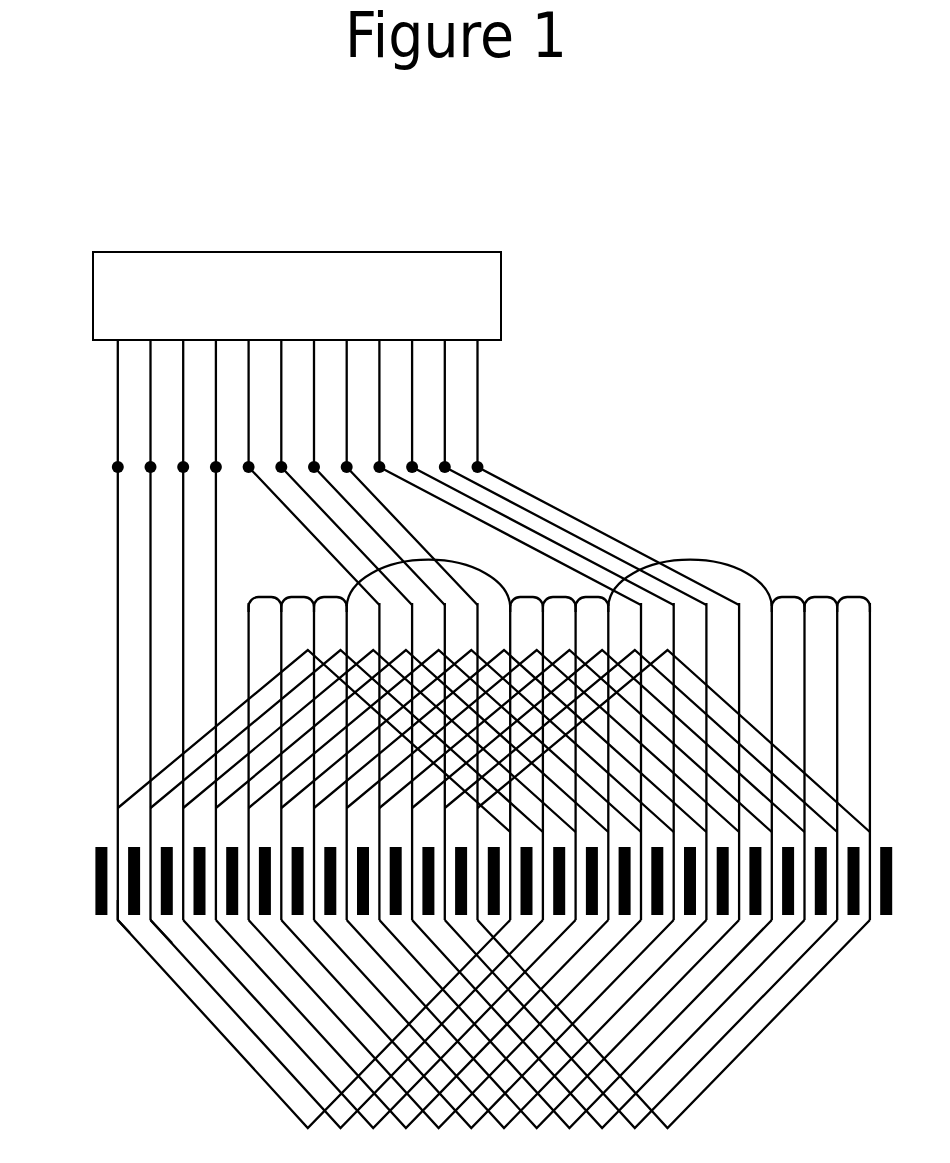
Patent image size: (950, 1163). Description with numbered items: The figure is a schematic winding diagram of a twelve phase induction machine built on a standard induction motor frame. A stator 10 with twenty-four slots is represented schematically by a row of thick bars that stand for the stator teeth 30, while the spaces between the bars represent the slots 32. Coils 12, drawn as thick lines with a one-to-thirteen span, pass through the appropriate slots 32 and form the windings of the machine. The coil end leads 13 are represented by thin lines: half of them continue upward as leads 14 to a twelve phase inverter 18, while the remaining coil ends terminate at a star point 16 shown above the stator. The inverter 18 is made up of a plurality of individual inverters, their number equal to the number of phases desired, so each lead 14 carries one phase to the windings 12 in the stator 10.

The stator 10 is at (95, 860).
The coils 12 is at (232, 1045).
The coil end leads 13 is at (117, 530).
The leads 14 is at (117, 421).
The star point 16 is at (852, 597).
The inverter 18 is at (501, 283).
The stator teeth 30 is at (116, 919).
The slots 32 is at (163, 937).